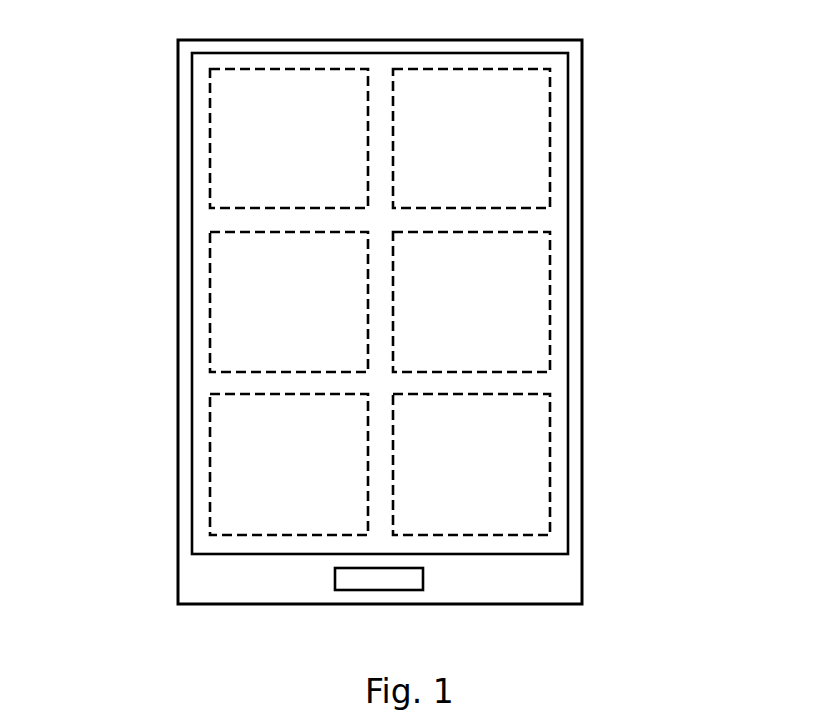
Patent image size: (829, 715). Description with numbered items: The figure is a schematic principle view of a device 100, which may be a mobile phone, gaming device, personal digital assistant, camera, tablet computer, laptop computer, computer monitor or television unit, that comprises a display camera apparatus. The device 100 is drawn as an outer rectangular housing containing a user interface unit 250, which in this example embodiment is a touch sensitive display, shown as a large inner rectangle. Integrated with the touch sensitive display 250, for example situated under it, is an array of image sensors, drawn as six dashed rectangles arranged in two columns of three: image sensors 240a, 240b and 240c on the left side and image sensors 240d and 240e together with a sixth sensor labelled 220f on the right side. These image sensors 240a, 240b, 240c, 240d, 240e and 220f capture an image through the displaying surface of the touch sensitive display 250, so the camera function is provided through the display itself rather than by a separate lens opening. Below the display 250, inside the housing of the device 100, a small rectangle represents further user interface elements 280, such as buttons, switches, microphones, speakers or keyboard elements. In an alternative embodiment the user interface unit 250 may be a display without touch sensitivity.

The device 100 is at (166, 27).
The user interface unit 250 is at (566, 62).
The image sensor 240a is at (295, 128).
The image sensor 240b is at (295, 297).
The image sensor 240c is at (295, 466).
The image sensor 240d is at (478, 135).
The image sensor 240e is at (478, 305).
The display region 220f is at (478, 467).
The further user interface elements 280 is at (345, 580).